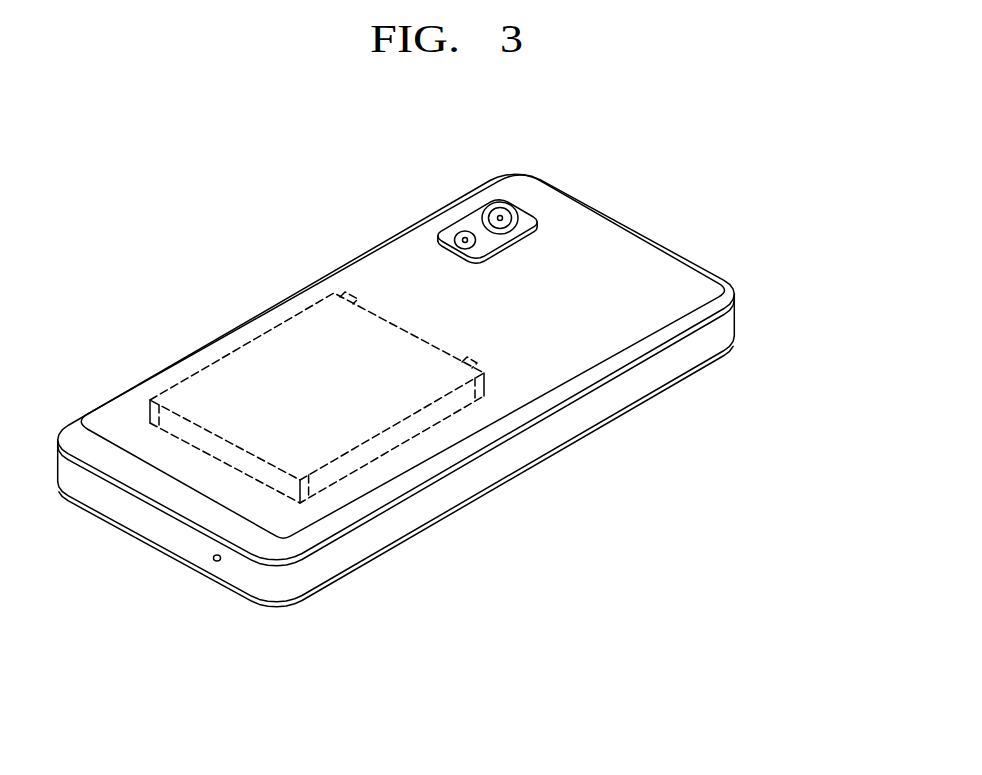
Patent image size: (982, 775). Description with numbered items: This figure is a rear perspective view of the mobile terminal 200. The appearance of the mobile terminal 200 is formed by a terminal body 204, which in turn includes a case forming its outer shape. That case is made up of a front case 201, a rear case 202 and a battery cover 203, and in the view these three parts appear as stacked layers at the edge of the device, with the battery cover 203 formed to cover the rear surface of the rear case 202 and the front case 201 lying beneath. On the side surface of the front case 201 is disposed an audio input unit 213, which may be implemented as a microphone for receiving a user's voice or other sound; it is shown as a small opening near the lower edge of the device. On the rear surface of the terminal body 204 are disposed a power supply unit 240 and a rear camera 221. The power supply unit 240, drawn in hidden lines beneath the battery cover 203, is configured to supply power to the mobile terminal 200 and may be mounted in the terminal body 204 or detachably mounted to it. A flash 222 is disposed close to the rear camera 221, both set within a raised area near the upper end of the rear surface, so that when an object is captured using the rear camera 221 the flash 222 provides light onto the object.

The mobile terminal 200 is at (230, 285).
The front case 201 is at (717, 357).
The rear case 202 is at (727, 325).
The battery cover 203 is at (720, 297).
The terminal body 204 is at (825, 264).
The audio input unit 213 is at (213, 560).
The rear camera 221 is at (498, 216).
The flash 222 is at (463, 238).
The power supply unit 240 is at (226, 362).